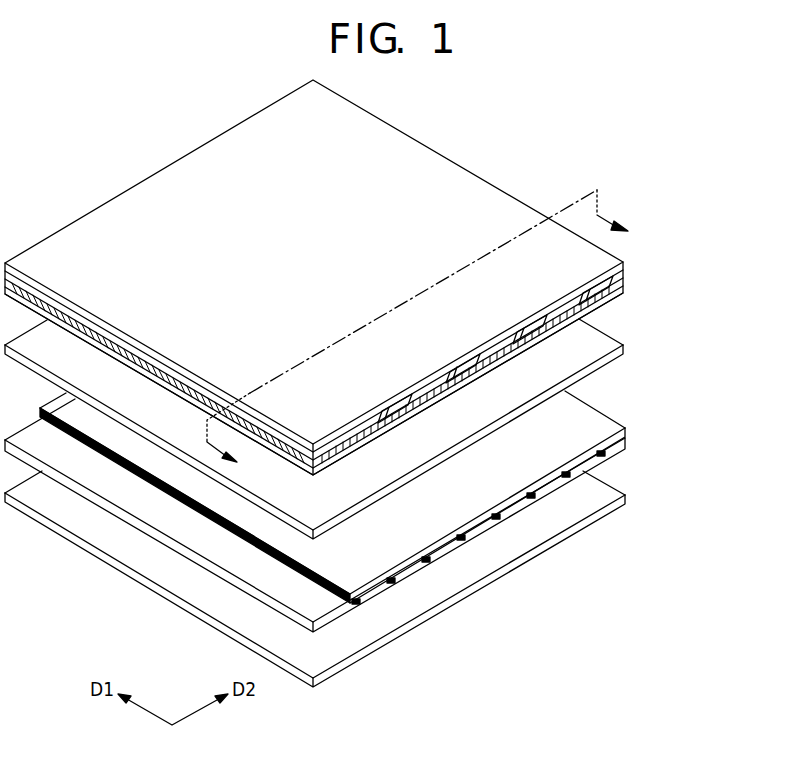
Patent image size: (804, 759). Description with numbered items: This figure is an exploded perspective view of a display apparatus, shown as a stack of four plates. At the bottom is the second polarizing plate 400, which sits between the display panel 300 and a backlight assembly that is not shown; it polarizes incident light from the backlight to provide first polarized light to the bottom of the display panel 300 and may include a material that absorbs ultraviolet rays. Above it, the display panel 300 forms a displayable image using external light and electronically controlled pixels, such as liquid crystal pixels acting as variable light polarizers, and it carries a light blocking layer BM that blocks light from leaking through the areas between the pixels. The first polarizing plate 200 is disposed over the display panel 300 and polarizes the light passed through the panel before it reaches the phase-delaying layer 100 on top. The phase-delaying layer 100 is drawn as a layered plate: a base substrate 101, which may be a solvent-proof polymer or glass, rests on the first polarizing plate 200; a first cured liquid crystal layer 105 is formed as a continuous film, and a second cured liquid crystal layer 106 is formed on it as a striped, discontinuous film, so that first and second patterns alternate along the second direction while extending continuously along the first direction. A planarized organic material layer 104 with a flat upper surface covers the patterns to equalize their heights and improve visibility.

The phase-delaying layer 100 is at (688, 237).
The organic material layer 104 is at (627, 266).
The second cured liquid crystal layer 106 is at (627, 274).
The first cured liquid crystal layer 105 is at (627, 282).
The base substrate 101 is at (627, 291).
The first polarizing plate 200 is at (626, 348).
The display panel 300 is at (688, 430).
The light blocking layer BM is at (627, 448).
The second polarizing plate 400 is at (627, 499).